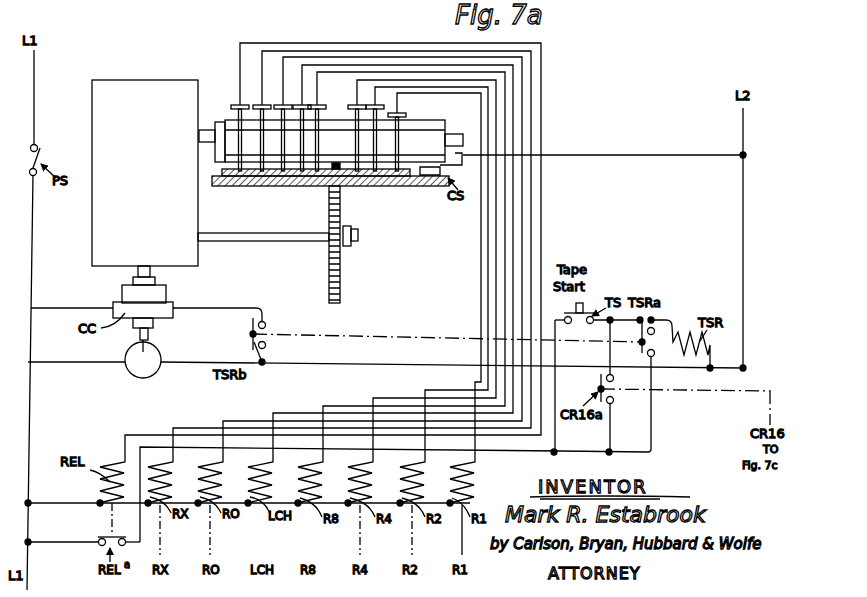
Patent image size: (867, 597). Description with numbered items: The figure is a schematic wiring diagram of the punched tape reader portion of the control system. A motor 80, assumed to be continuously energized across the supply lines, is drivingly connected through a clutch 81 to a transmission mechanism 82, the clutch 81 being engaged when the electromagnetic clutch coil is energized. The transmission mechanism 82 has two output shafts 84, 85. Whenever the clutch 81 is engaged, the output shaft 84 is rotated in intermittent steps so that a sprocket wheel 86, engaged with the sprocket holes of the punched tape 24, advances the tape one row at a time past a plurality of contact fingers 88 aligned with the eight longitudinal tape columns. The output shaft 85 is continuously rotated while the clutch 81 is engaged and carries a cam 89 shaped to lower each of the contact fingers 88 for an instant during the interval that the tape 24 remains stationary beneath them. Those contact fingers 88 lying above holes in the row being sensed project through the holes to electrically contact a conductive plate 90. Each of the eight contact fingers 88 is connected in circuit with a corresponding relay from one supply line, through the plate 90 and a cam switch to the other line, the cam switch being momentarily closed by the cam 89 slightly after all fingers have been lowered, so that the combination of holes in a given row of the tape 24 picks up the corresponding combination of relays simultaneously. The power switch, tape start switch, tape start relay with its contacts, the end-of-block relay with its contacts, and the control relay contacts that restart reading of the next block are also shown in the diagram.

The punched tape 24 is at (381, 183).
The motor 80 is at (136, 372).
The clutch 81 is at (166, 294).
The transmission mechanism 82 is at (170, 88).
The output shaft 84 is at (253, 238).
The output shaft 85 is at (208, 131).
The sprocket wheel 86 is at (328, 283).
The contact fingers 88 is at (404, 116).
The cam 89 is at (437, 129).
The conductive plate 90 is at (273, 184).